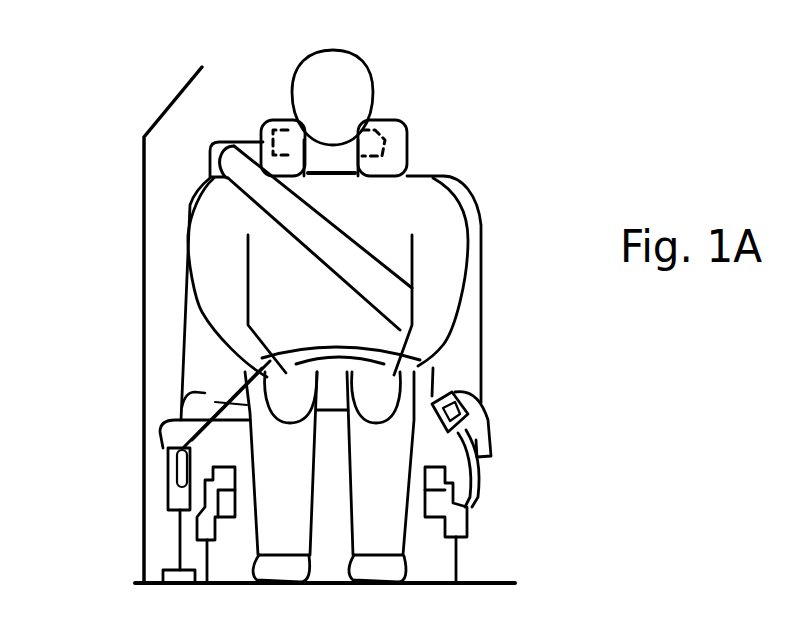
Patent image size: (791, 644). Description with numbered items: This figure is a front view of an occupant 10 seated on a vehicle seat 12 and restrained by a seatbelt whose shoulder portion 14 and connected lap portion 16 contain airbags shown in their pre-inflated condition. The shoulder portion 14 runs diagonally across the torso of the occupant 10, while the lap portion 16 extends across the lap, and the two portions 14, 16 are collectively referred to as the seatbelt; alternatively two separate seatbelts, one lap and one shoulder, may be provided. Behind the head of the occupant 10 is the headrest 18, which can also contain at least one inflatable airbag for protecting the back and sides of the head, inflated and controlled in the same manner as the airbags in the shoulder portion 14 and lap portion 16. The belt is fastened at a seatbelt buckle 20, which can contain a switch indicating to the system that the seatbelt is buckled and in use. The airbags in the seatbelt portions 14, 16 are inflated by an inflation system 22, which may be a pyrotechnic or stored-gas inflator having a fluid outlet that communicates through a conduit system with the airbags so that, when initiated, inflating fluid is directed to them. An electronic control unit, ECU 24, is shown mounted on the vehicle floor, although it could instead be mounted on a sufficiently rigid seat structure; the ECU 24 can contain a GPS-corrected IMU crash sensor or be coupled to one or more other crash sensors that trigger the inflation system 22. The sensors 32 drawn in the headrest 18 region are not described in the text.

The occupant 10 is at (428, 218).
The vehicle seat 12 is at (458, 350).
The shoulder portion 14 is at (233, 167).
The lap portion 16 is at (217, 387).
The headrest 18 is at (388, 157).
The seatbelt buckle 20 is at (464, 404).
The inflation system 22 is at (175, 492).
The ECU 24 is at (173, 573).
The sensor 32 is at (279, 128).